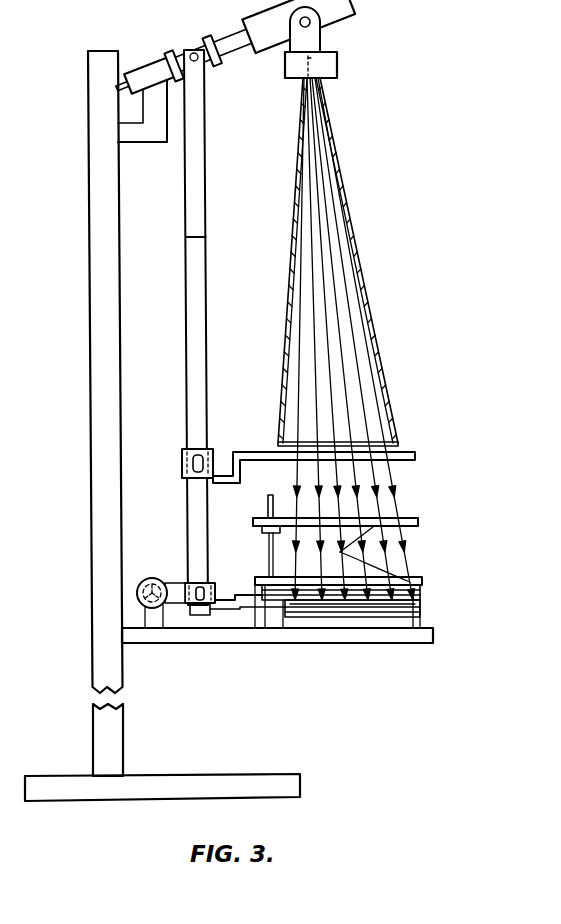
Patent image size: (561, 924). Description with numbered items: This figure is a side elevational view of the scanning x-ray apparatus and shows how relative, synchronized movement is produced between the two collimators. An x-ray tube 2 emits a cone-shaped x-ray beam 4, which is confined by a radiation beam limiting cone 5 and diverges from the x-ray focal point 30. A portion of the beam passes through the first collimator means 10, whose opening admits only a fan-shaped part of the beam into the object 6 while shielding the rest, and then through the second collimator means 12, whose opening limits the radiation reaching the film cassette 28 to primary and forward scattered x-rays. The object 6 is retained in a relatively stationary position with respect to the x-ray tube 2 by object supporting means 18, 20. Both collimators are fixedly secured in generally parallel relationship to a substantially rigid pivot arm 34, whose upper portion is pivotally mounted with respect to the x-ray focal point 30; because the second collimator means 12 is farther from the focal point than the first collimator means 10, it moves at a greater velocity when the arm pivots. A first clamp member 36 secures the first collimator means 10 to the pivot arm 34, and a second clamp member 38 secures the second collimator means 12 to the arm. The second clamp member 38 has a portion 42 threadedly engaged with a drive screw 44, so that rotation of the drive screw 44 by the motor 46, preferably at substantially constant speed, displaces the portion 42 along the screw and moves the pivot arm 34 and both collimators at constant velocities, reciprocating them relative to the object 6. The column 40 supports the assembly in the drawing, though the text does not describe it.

The x-ray tube 2 is at (337, 78).
The x-ray beam 4 is at (360, 258).
The radiation beam limiting cone 5 is at (384, 369).
The object 6 is at (396, 560).
The first collimator means 10 is at (246, 452).
The second collimator means 12 is at (308, 607).
The object supporting means 18 is at (416, 518).
The object supporting means 20 is at (424, 582).
The film cassette 28 is at (353, 598).
The x-ray focal point 30 is at (313, 57).
The pivot arm 34 is at (199, 180).
The first clamp member 36 is at (182, 452).
The second clamp member 38 is at (190, 583).
The support column 40 is at (100, 738).
The portion of clamp 42 is at (176, 606).
The drive screw 44 is at (140, 605).
The motor 46 is at (137, 596).